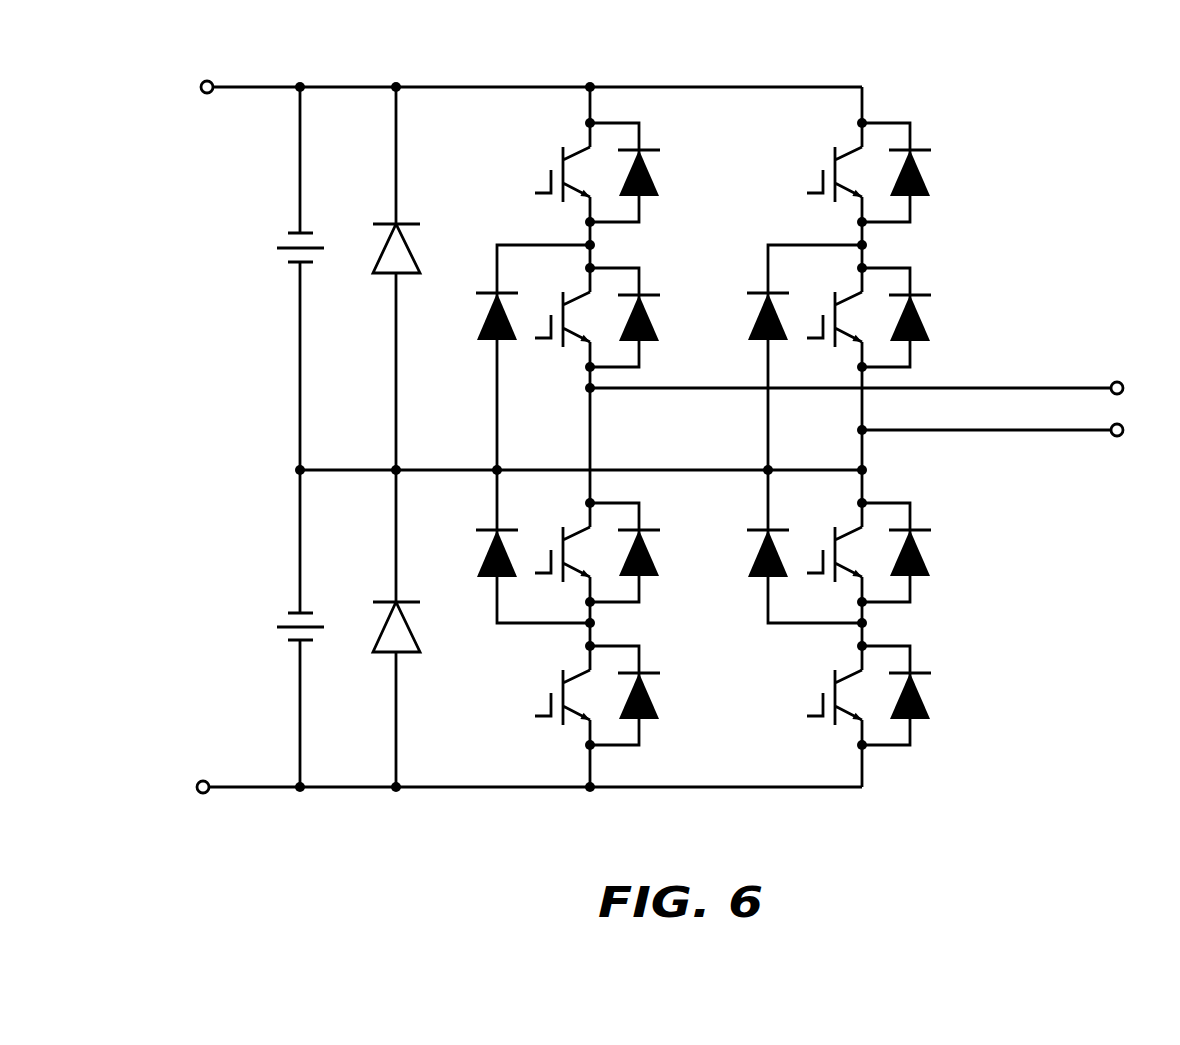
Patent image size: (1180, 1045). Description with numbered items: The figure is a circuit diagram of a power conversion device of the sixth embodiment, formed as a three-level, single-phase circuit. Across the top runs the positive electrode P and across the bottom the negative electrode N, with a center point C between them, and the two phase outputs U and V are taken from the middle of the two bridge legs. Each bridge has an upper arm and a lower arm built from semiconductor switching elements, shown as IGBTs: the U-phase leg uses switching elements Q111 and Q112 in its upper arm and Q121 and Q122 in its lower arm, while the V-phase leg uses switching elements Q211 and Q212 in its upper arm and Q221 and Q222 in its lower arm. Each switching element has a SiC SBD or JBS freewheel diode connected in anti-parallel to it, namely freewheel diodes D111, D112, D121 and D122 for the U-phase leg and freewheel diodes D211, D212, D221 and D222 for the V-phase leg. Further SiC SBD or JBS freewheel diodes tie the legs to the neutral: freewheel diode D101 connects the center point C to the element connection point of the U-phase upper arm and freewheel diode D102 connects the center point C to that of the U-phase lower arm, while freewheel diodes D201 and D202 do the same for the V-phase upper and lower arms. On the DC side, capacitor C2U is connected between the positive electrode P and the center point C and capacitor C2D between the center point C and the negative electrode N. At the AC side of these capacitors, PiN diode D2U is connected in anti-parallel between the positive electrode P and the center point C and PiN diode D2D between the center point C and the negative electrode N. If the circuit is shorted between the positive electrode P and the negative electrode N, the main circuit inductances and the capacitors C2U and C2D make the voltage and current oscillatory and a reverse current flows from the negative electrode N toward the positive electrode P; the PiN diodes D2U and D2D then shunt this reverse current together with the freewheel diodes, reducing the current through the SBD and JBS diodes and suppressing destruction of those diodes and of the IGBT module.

The positive electrode P is at (517, 92).
The negative electrode N is at (516, 788).
The center point C is at (564, 477).
The U-phase U is at (871, 390).
The V-phase V is at (1008, 432).
The capacitor C2U is at (275, 278).
The capacitor C2D is at (274, 628).
The PiN diode D2U is at (375, 278).
The PiN diode D2D is at (375, 628).
The freewheel diode D101 is at (500, 355).
The freewheel diode D102 is at (501, 549).
The freewheel diode D201 is at (778, 355).
The freewheel diode D202 is at (779, 549).
The semiconductor switching element Q111 is at (536, 172).
The semiconductor switching element Q112 is at (552, 311).
The semiconductor switching element Q121 is at (553, 545).
The semiconductor switching element Q122 is at (552, 688).
The freewheel diode D111 is at (663, 172).
The freewheel diode D112 is at (663, 314).
The freewheel diode D121 is at (656, 542).
The freewheel diode D122 is at (662, 695).
The semiconductor switching element Q211 is at (816, 170).
The semiconductor switching element Q212 is at (825, 311).
The semiconductor switching element Q221 is at (825, 545).
The semiconductor switching element Q222 is at (816, 690).
The freewheel diode D211 is at (932, 172).
The freewheel diode D212 is at (934, 310).
The freewheel diode D221 is at (928, 543).
The freewheel diode D222 is at (931, 687).